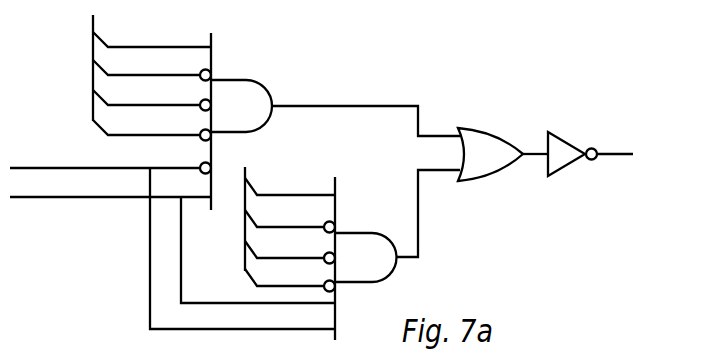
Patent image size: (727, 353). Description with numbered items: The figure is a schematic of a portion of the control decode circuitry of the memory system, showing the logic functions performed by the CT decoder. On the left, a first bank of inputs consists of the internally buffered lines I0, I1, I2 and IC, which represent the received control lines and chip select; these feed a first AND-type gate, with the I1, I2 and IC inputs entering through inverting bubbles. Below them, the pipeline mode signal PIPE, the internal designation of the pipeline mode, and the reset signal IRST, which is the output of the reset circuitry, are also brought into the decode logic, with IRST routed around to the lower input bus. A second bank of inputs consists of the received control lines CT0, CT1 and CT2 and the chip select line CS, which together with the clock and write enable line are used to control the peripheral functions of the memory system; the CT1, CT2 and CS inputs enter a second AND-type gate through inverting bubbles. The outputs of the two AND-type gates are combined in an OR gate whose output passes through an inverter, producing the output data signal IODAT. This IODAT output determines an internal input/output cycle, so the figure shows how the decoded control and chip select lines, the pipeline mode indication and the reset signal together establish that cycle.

The internally buffered line I0 is at (152, 35).
The internally buffered line I1 is at (152, 66).
The internally buffered line I2 is at (152, 96).
The internally buffered line Ic IC is at (152, 126).
The Pipe/ signal PIPE is at (68, 143).
The IRST/ reset signal IRST is at (172, 237).
The CT0 control line CT0 is at (290, 183).
The CT1 control line CT1 is at (290, 219).
The CT2 control line CT2 is at (290, 250).
The chip select CS/ line CS is at (290, 278).
The I/O DAT/ signal IODAT is at (703, 141).